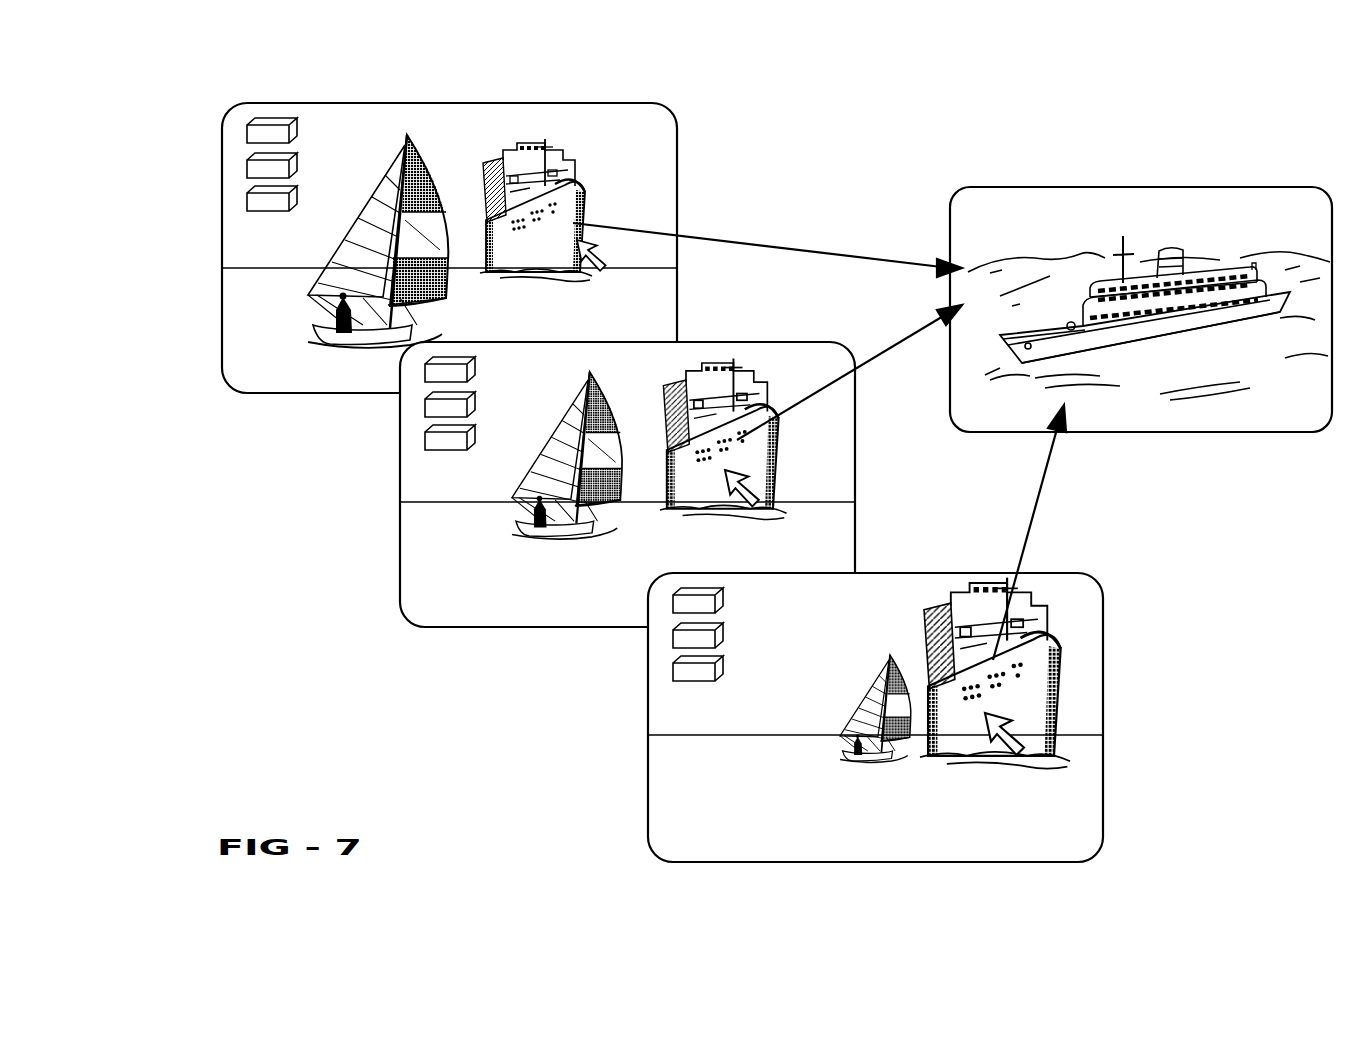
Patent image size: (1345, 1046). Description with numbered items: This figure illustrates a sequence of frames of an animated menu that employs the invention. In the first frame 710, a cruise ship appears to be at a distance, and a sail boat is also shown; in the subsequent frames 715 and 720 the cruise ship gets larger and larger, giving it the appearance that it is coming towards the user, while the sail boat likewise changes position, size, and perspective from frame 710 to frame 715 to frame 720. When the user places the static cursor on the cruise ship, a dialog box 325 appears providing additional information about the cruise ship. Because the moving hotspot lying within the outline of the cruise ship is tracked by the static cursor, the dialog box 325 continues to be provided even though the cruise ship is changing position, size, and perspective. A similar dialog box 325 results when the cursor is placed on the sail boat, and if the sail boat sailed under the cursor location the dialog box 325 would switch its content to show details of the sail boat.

The dialog box 325 is at (1080, 187).
The frame 710 is at (228, 105).
The frame 715 is at (398, 542).
The frame 720 is at (648, 797).